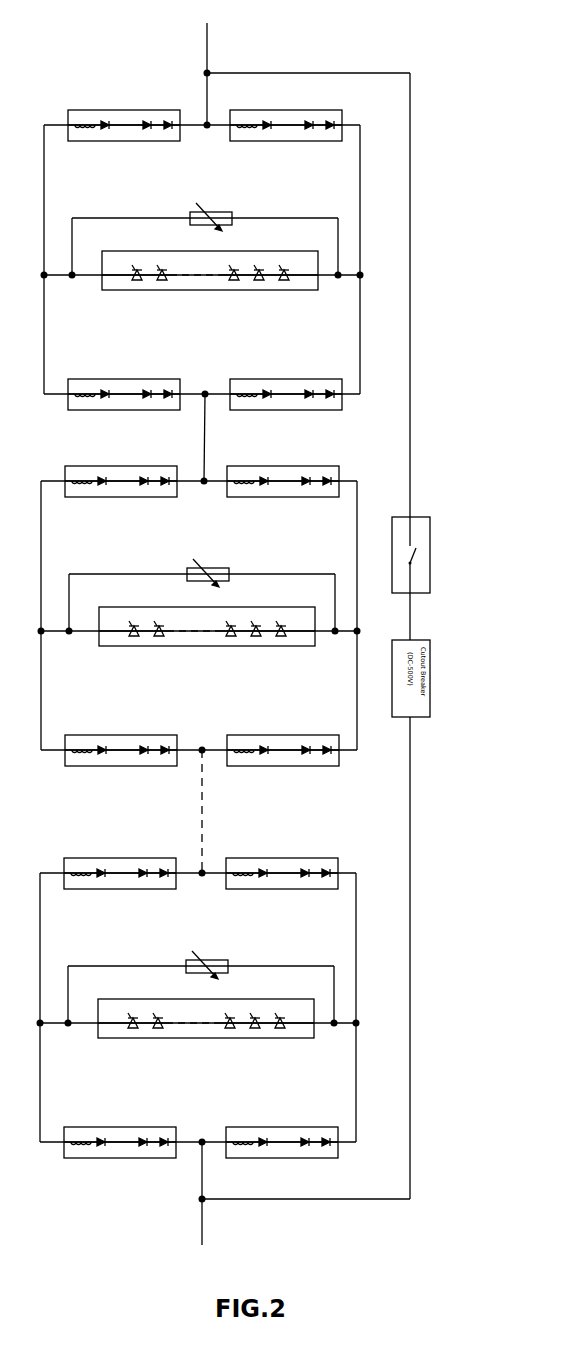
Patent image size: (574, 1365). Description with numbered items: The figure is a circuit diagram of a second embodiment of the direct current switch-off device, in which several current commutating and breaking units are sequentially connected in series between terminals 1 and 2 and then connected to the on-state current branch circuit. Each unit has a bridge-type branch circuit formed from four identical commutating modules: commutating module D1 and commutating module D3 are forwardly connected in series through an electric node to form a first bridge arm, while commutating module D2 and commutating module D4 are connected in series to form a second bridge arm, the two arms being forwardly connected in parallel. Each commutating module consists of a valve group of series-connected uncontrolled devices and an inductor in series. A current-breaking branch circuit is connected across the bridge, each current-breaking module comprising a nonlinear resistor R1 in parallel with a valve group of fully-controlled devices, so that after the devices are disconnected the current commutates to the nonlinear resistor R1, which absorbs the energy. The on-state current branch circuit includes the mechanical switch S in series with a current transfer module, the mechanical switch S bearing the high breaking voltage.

The first terminal 1 is at (207, 66).
The second terminal 2 is at (202, 1230).
The commutating module D1 is at (304, 143).
The commutating module D2 is at (302, 412).
The commutating module D3 is at (135, 143).
The commutating module D4 is at (128, 412).
The nonlinear resistor R1 is at (190, 213).
The mechanical switch S is at (430, 557).